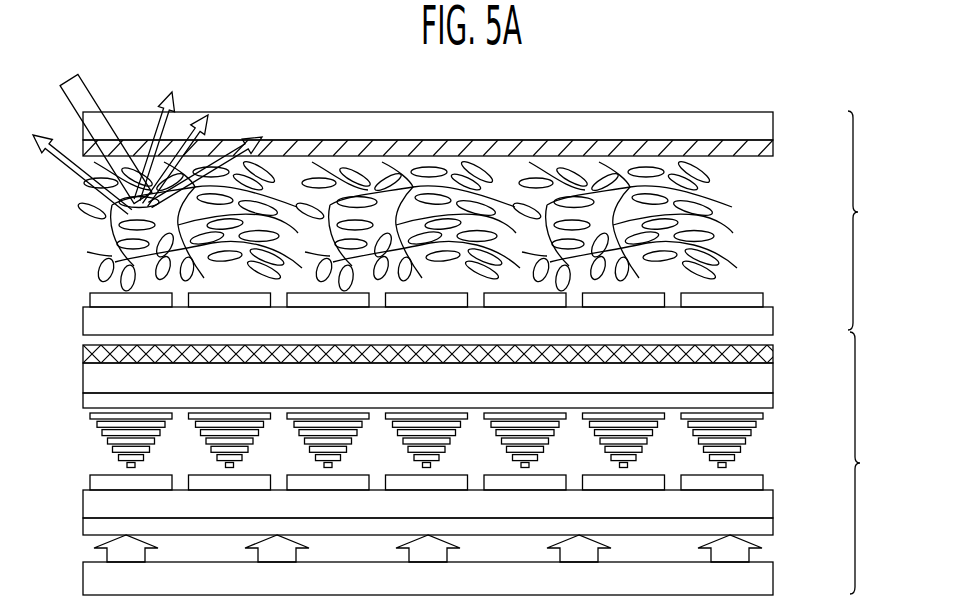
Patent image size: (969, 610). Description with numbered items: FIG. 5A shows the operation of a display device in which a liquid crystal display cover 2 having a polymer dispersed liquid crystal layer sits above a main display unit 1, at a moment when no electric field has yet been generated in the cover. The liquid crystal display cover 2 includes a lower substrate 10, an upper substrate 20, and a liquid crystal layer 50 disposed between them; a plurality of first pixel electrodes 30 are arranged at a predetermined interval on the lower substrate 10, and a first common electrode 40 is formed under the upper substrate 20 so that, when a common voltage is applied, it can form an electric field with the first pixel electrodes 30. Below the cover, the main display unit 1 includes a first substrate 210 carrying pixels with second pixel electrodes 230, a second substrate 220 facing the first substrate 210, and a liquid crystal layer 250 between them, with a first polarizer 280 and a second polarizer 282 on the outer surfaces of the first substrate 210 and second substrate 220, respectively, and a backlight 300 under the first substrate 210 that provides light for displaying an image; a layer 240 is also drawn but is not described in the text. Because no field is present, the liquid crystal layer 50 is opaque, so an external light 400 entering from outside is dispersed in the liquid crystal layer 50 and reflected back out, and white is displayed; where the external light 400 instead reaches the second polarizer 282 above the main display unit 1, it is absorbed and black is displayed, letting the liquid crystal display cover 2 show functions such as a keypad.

The main display unit 1 is at (863, 463).
The liquid crystal display cover 2 is at (861, 220).
The lower substrate 10 is at (773, 330).
The upper substrate 20 is at (773, 132).
The first pixel electrodes 30 is at (763, 300).
The first common electrode 40 is at (773, 153).
The liquid crystal layer 50 is at (722, 218).
The first substrate 210 is at (773, 502).
The second substrate 220 is at (773, 376).
The second pixel electrode 230 is at (763, 481).
The transparent layer 240 is at (773, 401).
The liquid crystal layer 250 is at (750, 438).
The first polarizer 280 is at (773, 528).
The second polarizer 282 is at (773, 348).
The backlight 300 is at (773, 580).
The external light 400 is at (91, 87).